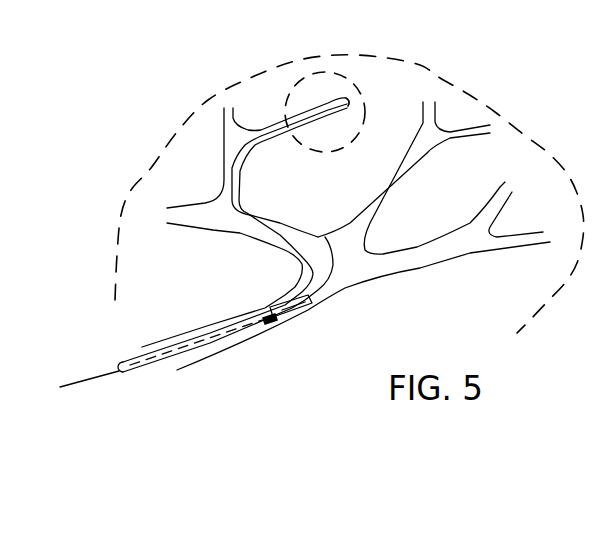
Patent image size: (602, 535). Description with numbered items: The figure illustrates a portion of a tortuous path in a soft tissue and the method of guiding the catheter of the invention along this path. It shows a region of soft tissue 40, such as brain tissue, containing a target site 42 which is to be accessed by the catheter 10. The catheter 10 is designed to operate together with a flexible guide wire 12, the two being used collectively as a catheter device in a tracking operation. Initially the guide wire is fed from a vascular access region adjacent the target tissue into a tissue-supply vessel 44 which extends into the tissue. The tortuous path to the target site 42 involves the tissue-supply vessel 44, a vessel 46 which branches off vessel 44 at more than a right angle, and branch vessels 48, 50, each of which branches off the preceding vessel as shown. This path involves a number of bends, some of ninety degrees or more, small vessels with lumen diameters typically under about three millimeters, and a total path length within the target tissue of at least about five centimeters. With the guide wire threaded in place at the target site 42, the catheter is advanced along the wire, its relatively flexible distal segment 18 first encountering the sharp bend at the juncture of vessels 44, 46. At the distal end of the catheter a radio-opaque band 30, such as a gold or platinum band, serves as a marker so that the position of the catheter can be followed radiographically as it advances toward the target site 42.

The catheter 10 is at (142, 382).
The guide wire 12 is at (327, 284).
The distal segment 18 is at (215, 366).
The radio-opaque band 30 is at (278, 326).
The region of soft tissue 40 is at (462, 76).
The target site 42 is at (360, 148).
The tissue-supply vessel 44 is at (217, 322).
The vessel 46 is at (276, 222).
The branch vessel 48 is at (223, 155).
The branch vessel 50 is at (332, 99).